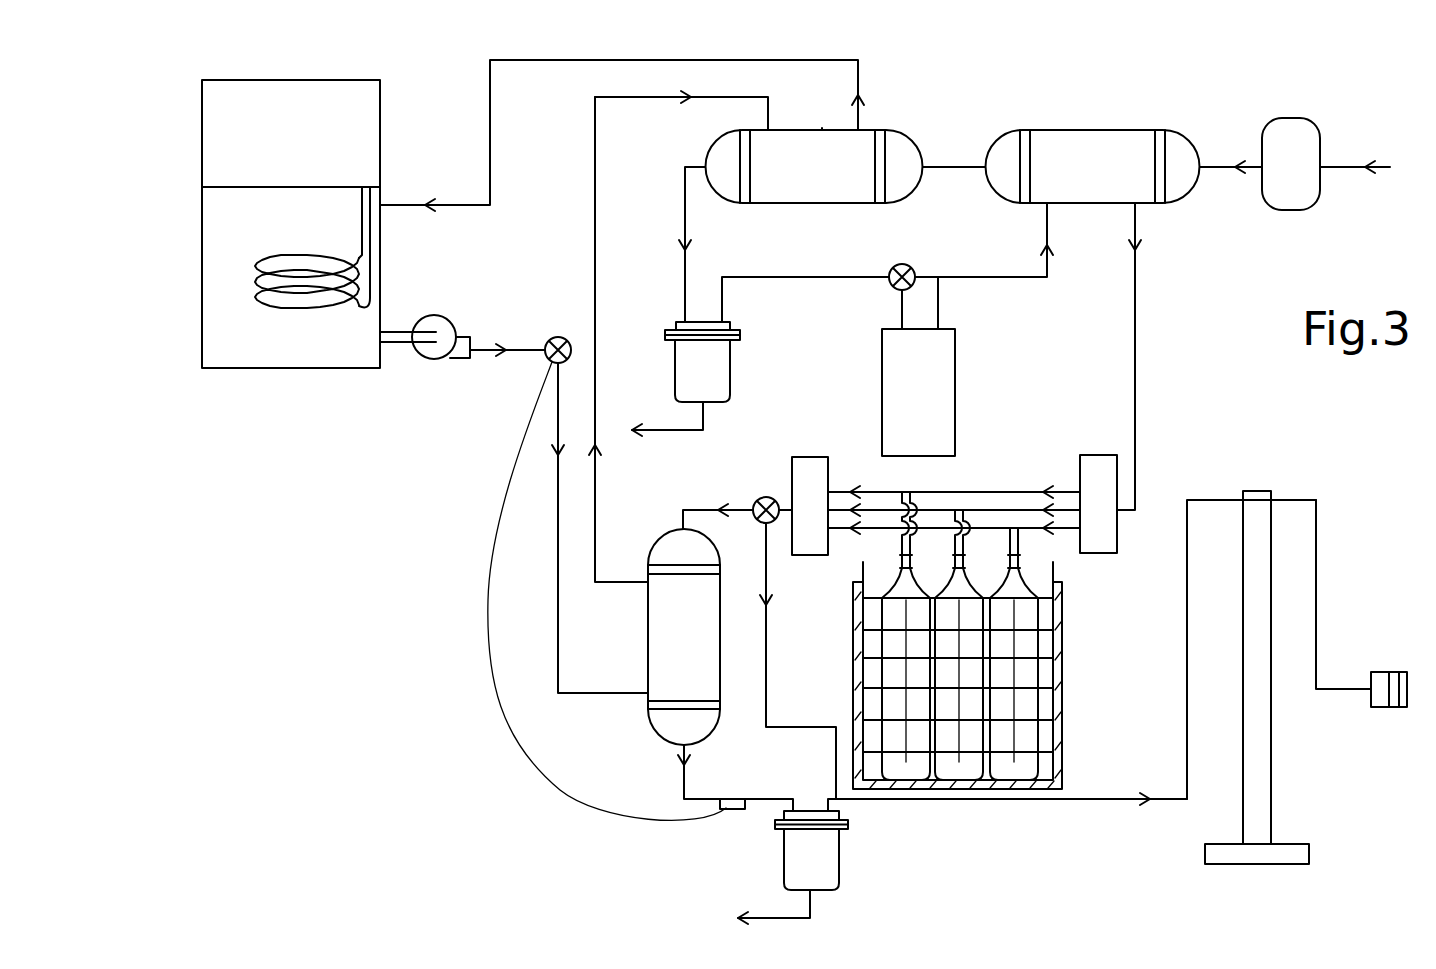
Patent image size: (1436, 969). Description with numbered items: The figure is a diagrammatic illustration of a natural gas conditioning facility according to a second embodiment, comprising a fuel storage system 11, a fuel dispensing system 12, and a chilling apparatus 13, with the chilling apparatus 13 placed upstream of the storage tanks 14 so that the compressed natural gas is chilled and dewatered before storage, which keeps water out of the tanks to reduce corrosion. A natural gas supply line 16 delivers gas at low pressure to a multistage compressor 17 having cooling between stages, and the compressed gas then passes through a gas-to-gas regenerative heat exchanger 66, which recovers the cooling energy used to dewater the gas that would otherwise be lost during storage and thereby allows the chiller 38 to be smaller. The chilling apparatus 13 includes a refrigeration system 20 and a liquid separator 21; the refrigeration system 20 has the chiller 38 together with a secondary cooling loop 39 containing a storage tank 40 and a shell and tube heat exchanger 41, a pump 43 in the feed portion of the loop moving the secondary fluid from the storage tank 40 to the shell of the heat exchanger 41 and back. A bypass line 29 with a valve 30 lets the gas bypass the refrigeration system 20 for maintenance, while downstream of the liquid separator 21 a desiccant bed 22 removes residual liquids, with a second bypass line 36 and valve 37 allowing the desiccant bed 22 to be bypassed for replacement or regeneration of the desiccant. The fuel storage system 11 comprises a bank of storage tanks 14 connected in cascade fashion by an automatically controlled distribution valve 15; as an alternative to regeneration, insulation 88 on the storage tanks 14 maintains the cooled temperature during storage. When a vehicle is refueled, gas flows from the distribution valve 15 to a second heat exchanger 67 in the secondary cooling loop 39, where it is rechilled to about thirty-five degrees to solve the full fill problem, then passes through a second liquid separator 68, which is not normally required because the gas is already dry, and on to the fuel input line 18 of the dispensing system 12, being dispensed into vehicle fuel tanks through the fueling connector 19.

The fuel storage system 11 is at (1030, 453).
The fuel dispensing system 12 is at (1356, 472).
The chilling apparatus 13 is at (932, 101).
The storage tanks 14 is at (1015, 707).
The distribution valve 15 is at (812, 457).
The natural gas supply line 16 is at (1377, 167).
The multistage compressor 17 is at (1290, 118).
The fuel input line 18 is at (1318, 585).
The fueling connector 19 is at (1382, 672).
The refrigeration system 20 is at (278, 78).
The liquid separator 21 is at (730, 370).
The desiccant bed 22 is at (955, 390).
The bypass line 29 is at (767, 656).
The valve 30 is at (763, 497).
The second bypass line 36 is at (932, 275).
The valve 37 is at (892, 266).
The chiller 38 is at (252, 82).
The secondary cooling loop 39 is at (593, 60).
The storage tank 40 is at (202, 235).
The heat exchanger 41 is at (822, 130).
The pump 43 is at (440, 360).
The gas-to-gas regenerative heat exchanger 66 is at (1086, 130).
The second heat exchanger 67 is at (648, 628).
The second liquid separator 68 is at (784, 858).
The insulation 88 is at (1062, 740).